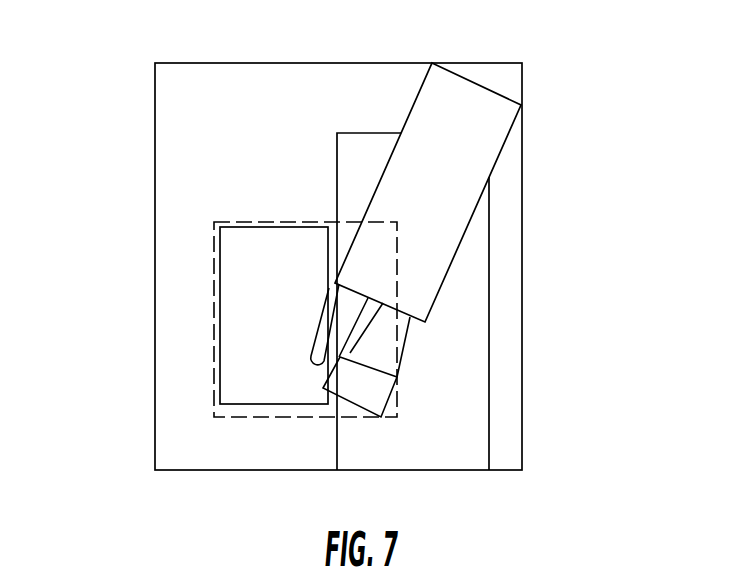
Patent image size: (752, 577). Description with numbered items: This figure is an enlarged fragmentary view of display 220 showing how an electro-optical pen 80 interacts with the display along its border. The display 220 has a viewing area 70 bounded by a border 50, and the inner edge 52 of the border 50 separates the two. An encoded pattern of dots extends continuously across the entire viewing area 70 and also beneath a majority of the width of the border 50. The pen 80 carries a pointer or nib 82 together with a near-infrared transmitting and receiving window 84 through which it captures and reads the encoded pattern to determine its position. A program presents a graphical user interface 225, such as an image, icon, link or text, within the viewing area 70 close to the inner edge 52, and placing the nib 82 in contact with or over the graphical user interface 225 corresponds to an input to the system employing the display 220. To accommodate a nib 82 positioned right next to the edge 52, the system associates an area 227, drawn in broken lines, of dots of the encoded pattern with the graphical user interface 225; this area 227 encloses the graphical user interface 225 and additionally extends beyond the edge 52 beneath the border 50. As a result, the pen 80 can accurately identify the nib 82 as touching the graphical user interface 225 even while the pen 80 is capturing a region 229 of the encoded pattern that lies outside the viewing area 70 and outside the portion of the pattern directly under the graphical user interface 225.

The viewing area 70 is at (217, 83).
The inner edge 52 is at (336, 175).
The electro-optical pen 80 is at (506, 140).
The border 50 is at (489, 305).
The graphical user interface 225 is at (268, 222).
The area 227 is at (214, 360).
The nib 82 is at (313, 372).
The near-infrared transmitting and receiving window 84 is at (411, 320).
The region 229 is at (393, 402).
The display 220 is at (127, 227).